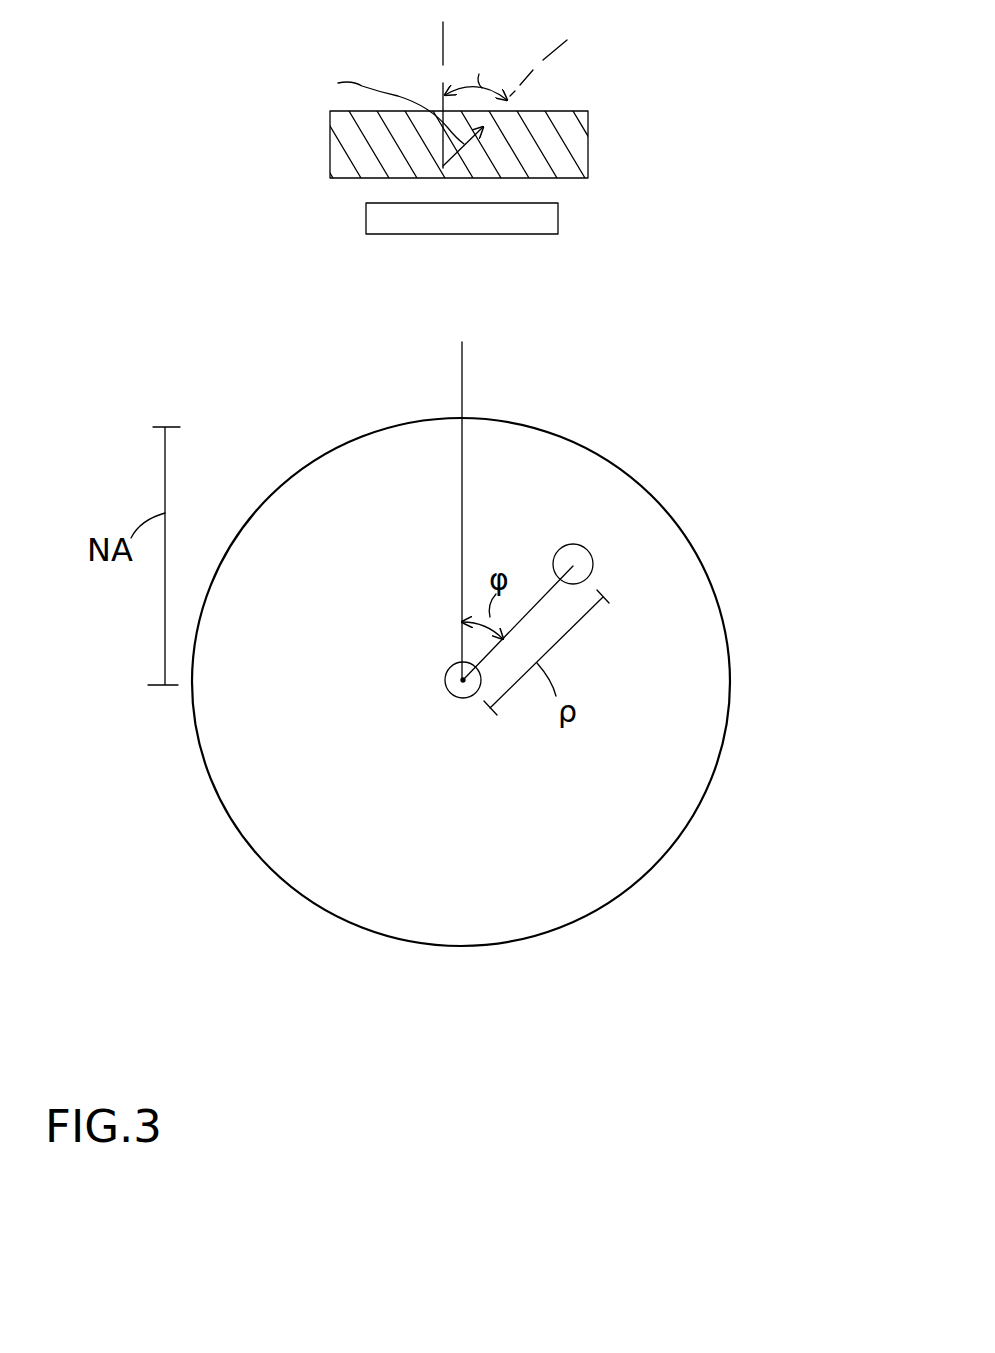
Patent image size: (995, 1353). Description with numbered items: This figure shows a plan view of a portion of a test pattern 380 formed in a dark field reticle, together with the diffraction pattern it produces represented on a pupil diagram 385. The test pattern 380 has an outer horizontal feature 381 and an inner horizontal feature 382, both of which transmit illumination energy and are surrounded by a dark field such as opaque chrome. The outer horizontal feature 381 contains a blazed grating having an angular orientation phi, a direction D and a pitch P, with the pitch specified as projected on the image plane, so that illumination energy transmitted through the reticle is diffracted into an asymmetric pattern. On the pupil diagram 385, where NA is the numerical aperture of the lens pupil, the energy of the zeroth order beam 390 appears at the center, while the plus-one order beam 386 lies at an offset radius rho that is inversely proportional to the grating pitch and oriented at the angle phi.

The test pattern 380 is at (250, 184).
The outer horizontal feature 381 is at (588, 142).
The inner horizontal feature 382 is at (558, 212).
The pupil diagram 385 is at (728, 710).
The +1 order beam 386 is at (573, 545).
The zeroth order beam 390 is at (450, 688).